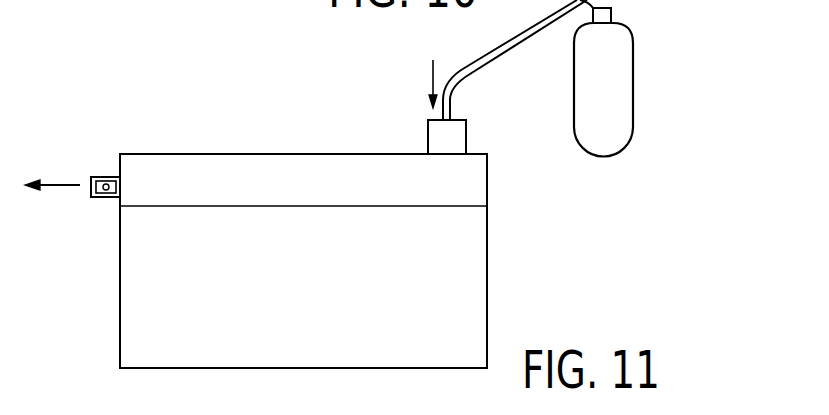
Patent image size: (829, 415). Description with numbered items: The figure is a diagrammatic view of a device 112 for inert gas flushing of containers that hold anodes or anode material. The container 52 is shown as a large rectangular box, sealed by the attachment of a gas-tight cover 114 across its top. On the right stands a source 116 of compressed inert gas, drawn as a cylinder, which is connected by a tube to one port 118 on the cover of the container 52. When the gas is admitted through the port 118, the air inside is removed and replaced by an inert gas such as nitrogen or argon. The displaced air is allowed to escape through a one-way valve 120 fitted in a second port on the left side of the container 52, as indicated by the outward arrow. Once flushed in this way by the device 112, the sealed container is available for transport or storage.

The container 52 is at (577, 266).
The device for inert gas flushing 112 is at (651, 199).
The gas-tight cover 114 is at (223, 170).
The source of compressed inert gas 116 is at (620, 77).
The port 118 is at (438, 135).
The one-way valve 120 is at (106, 181).